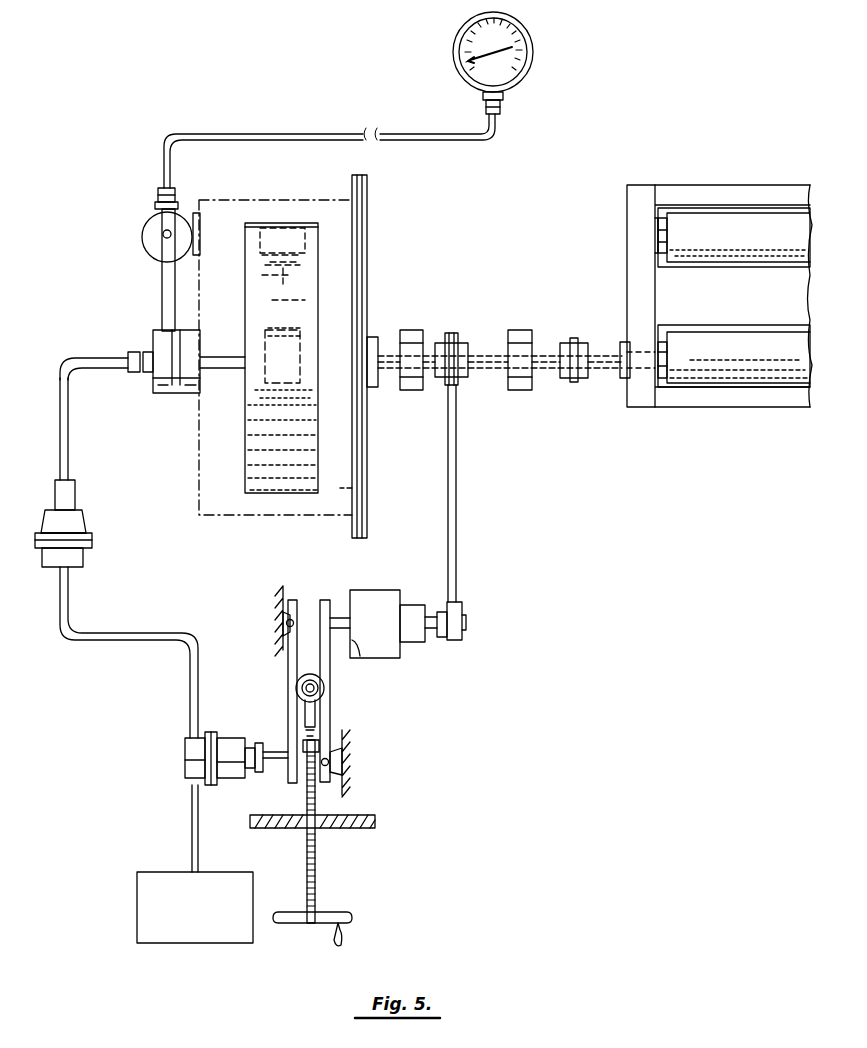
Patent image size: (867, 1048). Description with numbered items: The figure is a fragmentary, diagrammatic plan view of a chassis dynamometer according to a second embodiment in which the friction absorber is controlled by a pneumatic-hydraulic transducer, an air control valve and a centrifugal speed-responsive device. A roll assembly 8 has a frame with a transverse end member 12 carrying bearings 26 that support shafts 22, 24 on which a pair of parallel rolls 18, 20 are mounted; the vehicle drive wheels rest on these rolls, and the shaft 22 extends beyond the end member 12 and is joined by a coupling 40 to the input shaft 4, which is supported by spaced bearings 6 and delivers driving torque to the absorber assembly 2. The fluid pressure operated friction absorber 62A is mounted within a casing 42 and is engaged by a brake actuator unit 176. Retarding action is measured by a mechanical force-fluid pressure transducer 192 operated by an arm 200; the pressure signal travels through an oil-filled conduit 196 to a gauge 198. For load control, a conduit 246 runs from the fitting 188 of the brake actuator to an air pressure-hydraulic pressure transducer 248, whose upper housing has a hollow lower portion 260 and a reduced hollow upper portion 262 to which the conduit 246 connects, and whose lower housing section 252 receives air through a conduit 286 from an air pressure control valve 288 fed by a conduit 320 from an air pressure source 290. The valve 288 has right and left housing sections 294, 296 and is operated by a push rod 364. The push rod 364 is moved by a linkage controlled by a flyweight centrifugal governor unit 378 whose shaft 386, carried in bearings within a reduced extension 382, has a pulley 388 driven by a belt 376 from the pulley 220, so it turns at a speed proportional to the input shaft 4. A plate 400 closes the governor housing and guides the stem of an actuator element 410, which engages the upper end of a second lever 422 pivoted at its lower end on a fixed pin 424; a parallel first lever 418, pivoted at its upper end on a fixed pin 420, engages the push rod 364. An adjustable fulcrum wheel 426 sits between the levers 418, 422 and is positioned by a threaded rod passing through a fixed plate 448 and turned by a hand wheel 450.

The absorber assembly 2 is at (370, 218).
The input shaft 4 is at (487, 355).
The bearings 6 is at (413, 333).
The roll assembly 8 is at (690, 185).
The transverse end member 12 is at (637, 270).
The roll 18 is at (738, 340).
The roll 20 is at (713, 250).
The shaft 22 is at (600, 368).
The shaft 24 is at (656, 238).
The bearings 26 is at (657, 222).
The coupling 40 is at (574, 341).
The coolant casing 42 is at (335, 488).
The fluid pressure operated friction absorber 62A is at (296, 223).
The brake actuator unit 176 is at (275, 355).
The fitting 188 is at (148, 355).
The transducer 192 is at (150, 222).
The conduit 196 is at (358, 126).
The gauge 198 is at (456, 58).
The arm 200 is at (162, 287).
The pulley 220 is at (455, 378).
The conduit 246 is at (68, 428).
The air pressure-hydraulic pressure transducer 248 is at (88, 525).
The lower housing section 252 is at (84, 555).
The hollow lower portion 260 is at (52, 512).
The reduced hollow upper portion 262 is at (77, 486).
The conduit 286 is at (90, 640).
The air pressure control valve 288 is at (231, 738).
The air pressure source 290 is at (172, 885).
The right housing section 294 is at (212, 786).
The left housing section 296 is at (192, 738).
The conduit 320 is at (192, 808).
The push rod 364 is at (271, 760).
The belt 376 is at (458, 422).
The flyweight centrifugal governor unit 378 is at (382, 590).
The reduced extension 382 is at (412, 642).
The shaft 386 is at (440, 635).
The pulley 388 is at (465, 630).
The plate 400 is at (362, 658).
The actuator element 410 is at (340, 618).
The first lever 418 is at (290, 700).
The fixed pin 420 is at (282, 623).
The second lever 422 is at (330, 705).
The fixed pin 424 is at (350, 758).
The adjustable fulcrum wheel 426 is at (300, 680).
The fixed plate 448 is at (330, 829).
The hand wheel 450 is at (290, 925).